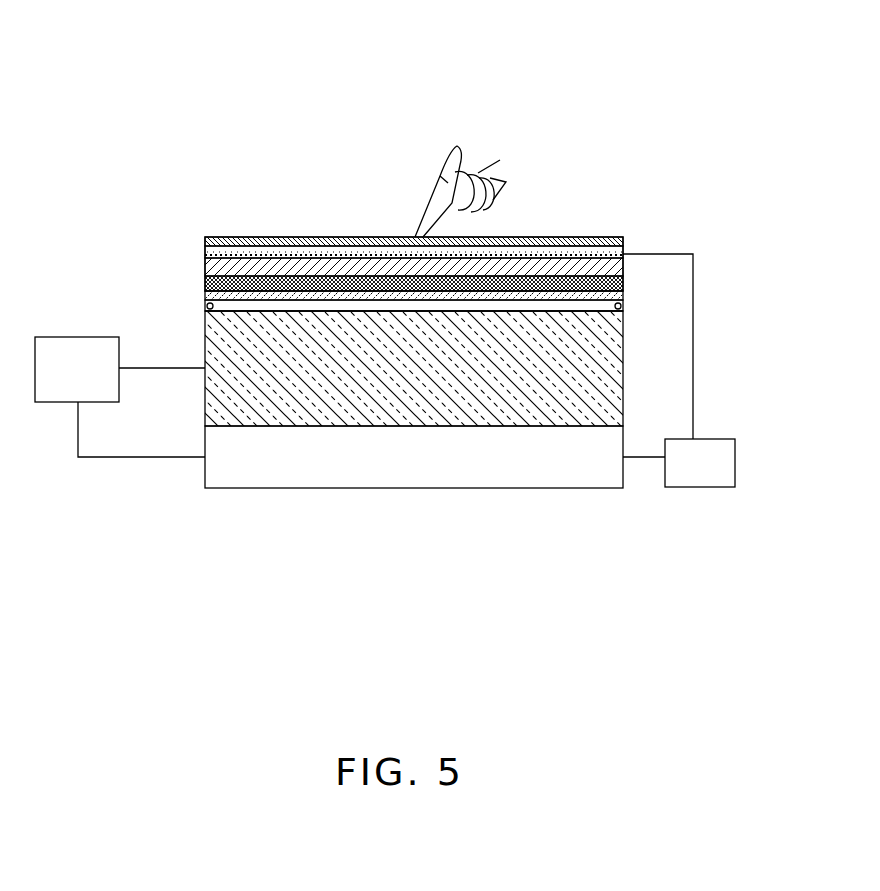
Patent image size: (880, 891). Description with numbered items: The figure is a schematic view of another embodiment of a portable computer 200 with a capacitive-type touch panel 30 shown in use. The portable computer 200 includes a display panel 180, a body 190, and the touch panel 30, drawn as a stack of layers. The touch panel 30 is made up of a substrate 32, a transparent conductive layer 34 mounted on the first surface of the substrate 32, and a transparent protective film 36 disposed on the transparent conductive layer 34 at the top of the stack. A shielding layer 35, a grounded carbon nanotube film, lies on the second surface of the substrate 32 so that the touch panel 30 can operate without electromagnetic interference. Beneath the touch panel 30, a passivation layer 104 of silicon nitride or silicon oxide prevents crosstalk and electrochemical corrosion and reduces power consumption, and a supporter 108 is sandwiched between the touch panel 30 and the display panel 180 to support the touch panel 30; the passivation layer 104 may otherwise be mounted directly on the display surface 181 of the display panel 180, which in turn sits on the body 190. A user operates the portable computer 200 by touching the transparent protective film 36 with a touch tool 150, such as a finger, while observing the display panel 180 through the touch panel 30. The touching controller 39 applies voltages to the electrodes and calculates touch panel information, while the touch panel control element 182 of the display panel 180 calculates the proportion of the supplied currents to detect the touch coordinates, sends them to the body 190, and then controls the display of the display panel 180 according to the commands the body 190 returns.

The portable computer 200 is at (270, 66).
The touch tool 150 is at (438, 174).
The transparent protective film 36 is at (205, 241).
The transparent conductive layer 34 is at (205, 255).
The substrate 32 is at (205, 268).
The shielding layer 35 is at (205, 285).
The capacitive-type touch panel 30 is at (143, 224).
The passivation layer 104 is at (205, 296).
The supporter 108 is at (205, 308).
The display surface 181 is at (250, 313).
The display panel 180 is at (205, 390).
The body 190 is at (413, 473).
The touch panel control element 182 is at (62, 348).
The touching controller 39 is at (700, 487).